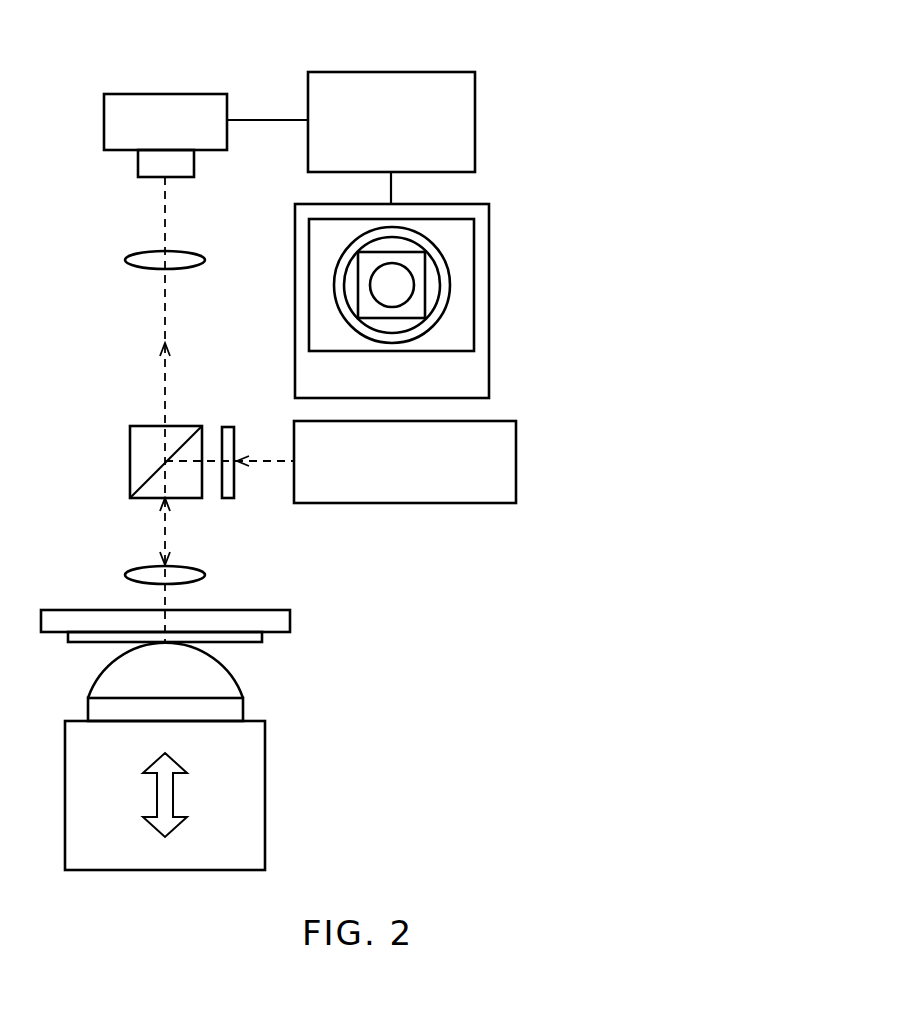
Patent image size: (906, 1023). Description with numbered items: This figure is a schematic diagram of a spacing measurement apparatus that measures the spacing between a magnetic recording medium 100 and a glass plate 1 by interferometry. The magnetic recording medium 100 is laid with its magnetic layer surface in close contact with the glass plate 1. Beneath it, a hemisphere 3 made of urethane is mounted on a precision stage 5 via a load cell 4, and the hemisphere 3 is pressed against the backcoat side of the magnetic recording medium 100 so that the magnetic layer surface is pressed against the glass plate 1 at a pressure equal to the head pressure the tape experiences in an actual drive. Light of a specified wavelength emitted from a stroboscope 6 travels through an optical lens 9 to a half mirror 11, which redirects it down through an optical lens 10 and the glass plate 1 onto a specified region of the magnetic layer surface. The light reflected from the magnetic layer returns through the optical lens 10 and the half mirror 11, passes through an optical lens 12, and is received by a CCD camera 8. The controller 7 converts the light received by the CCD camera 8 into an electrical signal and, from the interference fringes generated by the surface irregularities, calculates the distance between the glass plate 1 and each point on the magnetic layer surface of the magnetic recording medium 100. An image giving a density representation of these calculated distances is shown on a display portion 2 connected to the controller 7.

The glass plate 1 is at (283, 620).
The magnetic recording medium 100 is at (255, 636).
The display portion 2 is at (489, 285).
The hemisphere 3 is at (233, 682).
The load cell 4 is at (233, 708).
The precision stage 5 is at (255, 797).
The stroboscope 6 is at (516, 461).
The controller 7 is at (450, 72).
The CCD camera 8 is at (202, 94).
The optical lens 9 is at (232, 427).
The optical lens 10 is at (196, 568).
The half mirror 11 is at (130, 461).
The optical lens 12 is at (196, 253).